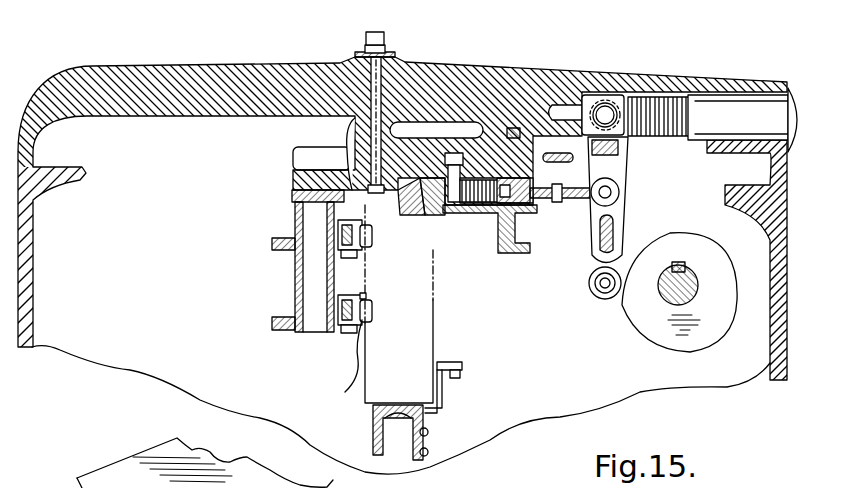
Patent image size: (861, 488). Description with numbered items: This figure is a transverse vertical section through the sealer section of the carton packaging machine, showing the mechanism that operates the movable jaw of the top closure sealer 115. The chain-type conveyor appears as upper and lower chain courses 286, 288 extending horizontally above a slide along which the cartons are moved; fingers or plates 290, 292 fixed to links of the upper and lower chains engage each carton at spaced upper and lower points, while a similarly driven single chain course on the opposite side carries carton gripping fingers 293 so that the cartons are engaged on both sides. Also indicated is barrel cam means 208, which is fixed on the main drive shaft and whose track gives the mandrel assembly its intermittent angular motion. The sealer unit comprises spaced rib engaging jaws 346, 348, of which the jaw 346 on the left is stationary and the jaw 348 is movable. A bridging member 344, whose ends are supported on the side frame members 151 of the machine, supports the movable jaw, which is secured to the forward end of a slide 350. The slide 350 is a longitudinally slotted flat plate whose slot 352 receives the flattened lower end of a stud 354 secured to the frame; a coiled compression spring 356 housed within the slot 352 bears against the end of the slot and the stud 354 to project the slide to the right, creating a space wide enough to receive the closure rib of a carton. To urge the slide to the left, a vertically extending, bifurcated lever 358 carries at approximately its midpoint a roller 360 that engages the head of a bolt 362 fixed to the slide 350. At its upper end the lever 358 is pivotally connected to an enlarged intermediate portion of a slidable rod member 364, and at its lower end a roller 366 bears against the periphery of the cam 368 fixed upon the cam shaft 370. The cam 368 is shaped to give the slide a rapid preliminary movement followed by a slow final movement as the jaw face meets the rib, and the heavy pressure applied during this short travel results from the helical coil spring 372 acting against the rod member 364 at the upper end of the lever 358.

The second station sealer 115 is at (285, 190).
The side frame member 151 is at (45, 347).
The barrel cam means 208 is at (312, 341).
The upper chain course 286 is at (342, 232).
The lower chain course 288 is at (342, 305).
The finger or plate 290 is at (375, 238).
The finger or plate 292 is at (348, 388).
The carton gripping finger 293 is at (432, 240).
The bridging member 344 is at (528, 50).
The stationary rib engaging jaw 346 is at (352, 188).
The movable rib engaging jaw 348 is at (422, 198).
The slide 350 is at (425, 178).
The slot 352 is at (437, 202).
The stud 354 is at (488, 213).
The coiled compression spring 356 is at (500, 206).
The lever 358 is at (628, 212).
The roller 360 is at (615, 192).
The bolt 362 is at (574, 199).
The slidable rod member 364 is at (692, 135).
The roller 366 is at (601, 306).
The cam 368 is at (650, 337).
The cam shaft 370 is at (688, 272).
The helical coil spring 372 is at (673, 137).